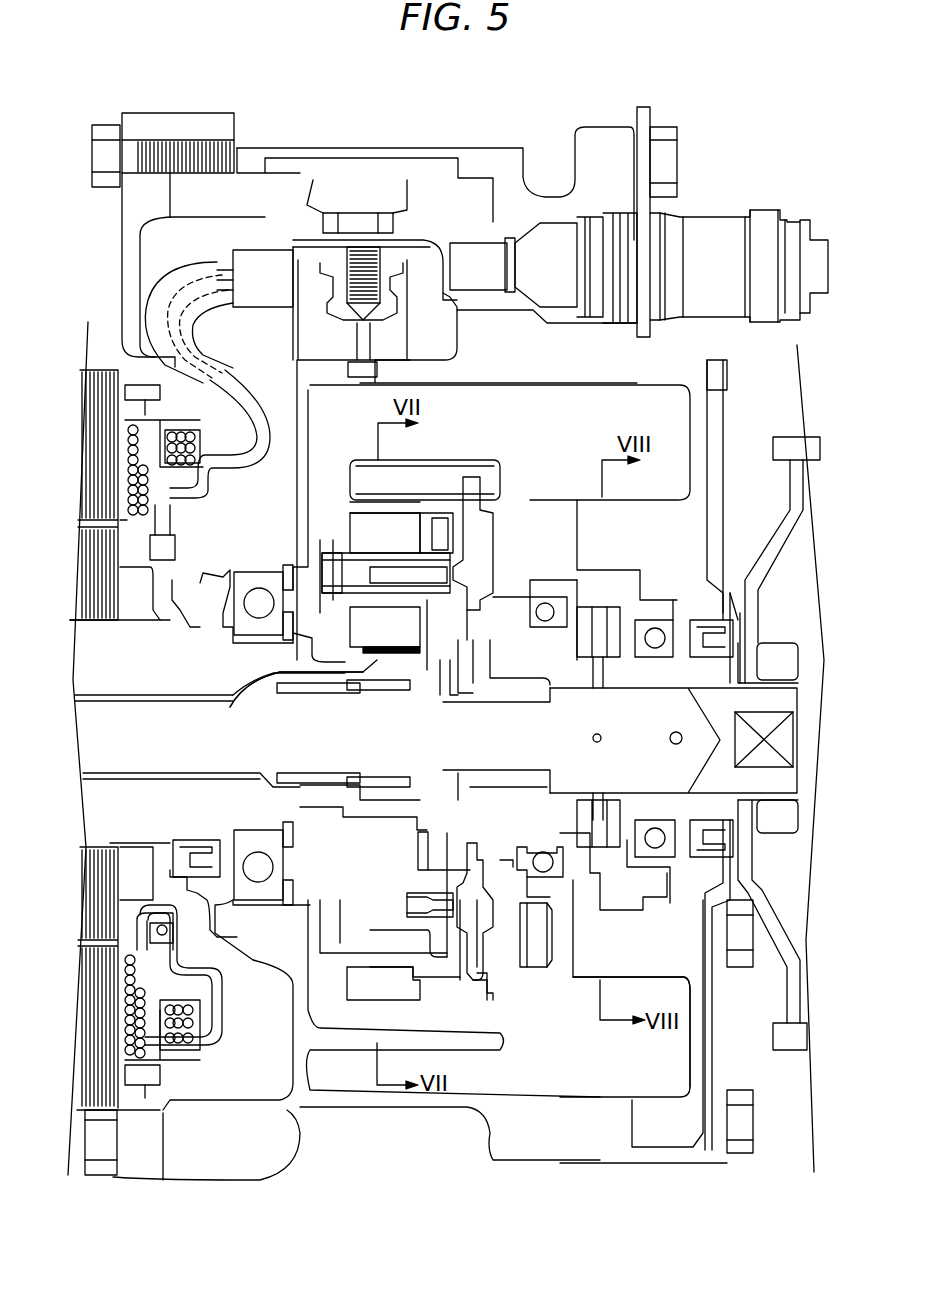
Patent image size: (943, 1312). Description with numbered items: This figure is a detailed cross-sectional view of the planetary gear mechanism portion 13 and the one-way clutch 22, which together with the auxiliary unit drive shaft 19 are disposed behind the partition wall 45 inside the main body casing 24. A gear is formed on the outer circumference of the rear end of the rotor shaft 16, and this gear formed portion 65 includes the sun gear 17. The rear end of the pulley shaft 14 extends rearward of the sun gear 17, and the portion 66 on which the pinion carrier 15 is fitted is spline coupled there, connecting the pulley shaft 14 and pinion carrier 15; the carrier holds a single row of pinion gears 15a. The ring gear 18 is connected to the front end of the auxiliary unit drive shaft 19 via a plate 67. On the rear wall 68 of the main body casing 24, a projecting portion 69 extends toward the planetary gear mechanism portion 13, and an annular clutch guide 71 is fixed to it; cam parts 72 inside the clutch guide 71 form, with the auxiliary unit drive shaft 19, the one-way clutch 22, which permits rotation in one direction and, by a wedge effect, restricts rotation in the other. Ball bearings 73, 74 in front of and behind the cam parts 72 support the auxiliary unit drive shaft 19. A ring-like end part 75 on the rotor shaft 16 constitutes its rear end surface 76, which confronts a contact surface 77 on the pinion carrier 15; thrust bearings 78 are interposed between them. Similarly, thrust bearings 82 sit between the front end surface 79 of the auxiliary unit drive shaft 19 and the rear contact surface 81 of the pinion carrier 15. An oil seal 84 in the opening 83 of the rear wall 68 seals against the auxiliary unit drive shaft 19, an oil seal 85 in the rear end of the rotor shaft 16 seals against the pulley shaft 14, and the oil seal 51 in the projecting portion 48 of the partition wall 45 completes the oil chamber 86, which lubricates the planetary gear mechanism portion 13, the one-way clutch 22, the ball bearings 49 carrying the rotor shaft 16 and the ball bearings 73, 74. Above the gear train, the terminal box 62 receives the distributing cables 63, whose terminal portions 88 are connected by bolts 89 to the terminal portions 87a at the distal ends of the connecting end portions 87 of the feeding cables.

The planetary gear mechanism portion 13 is at (484, 448).
The pulley shaft 14 is at (115, 758).
The pinion carrier 15 is at (447, 540).
The pinion gears 15a is at (363, 537).
The rotor shaft 16 is at (133, 673).
The sun gear 17 is at (227, 713).
The ring gear 18 is at (433, 470).
The auxiliary unit drive shaft 19 is at (630, 803).
The one-way clutch 22 is at (613, 890).
The main body casing 24 is at (103, 340).
The partition wall 45 is at (293, 487).
The projecting portion 48 is at (247, 532).
The ball bearings 49 is at (257, 610).
The oil seal 51 is at (190, 593).
The terminal box 62 is at (383, 165).
The distributing cables 63 is at (243, 372).
The gear formed portion 65 is at (237, 677).
The portion where the pinion carrier is fitted on 66 is at (535, 692).
The plate 67 is at (480, 523).
The rear wall 68 is at (703, 433).
The projecting portion 69 is at (660, 513).
The clutch guide 71 is at (613, 890).
The cam parts 72 is at (600, 847).
The ball bearing 73 is at (660, 850).
The ball bearing 74 is at (545, 857).
The end part 75 is at (400, 700).
The rear end surface 76 is at (437, 698).
The contact surface 77 is at (455, 697).
The thrust bearings 78 is at (443, 667).
The front end surface 79 is at (490, 688).
The rear contact surface 81 is at (475, 690).
The thrust bearings 82 is at (490, 658).
The opening 83 is at (730, 613).
The oil seal 84 is at (747, 640).
The oil seal 85 is at (375, 692).
The oil chamber 86 is at (680, 398).
The connecting end portions of feeding cables 87 is at (710, 220).
The terminal portions 87a is at (423, 247).
The terminal portions 88 is at (300, 253).
The bolts 89 is at (400, 226).